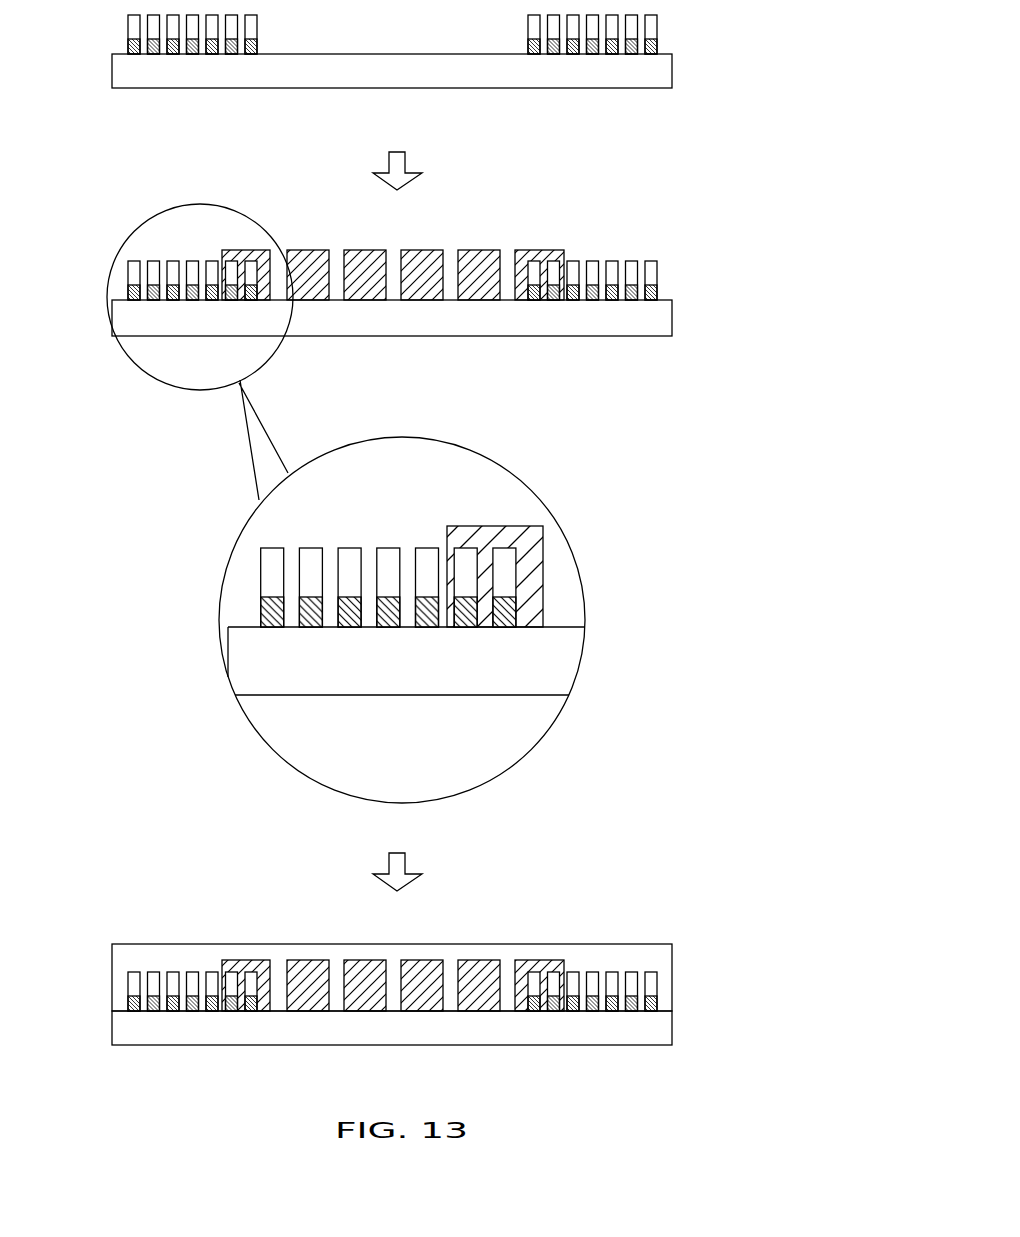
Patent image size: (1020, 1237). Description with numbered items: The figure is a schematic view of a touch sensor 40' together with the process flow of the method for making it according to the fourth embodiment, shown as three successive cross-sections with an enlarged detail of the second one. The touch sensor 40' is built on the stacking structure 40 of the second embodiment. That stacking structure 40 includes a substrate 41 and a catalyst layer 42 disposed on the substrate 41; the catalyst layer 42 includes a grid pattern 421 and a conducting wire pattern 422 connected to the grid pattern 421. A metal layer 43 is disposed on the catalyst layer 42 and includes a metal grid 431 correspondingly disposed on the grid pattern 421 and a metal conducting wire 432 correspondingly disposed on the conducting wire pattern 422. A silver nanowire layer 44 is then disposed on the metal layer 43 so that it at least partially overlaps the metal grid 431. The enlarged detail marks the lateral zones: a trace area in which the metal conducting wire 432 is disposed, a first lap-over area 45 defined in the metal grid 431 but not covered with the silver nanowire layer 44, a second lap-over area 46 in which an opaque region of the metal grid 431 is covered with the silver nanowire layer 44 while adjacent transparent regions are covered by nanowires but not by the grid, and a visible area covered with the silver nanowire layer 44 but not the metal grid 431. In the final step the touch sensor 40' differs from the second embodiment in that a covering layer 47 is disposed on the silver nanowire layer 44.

The stacking structure 40 is at (726, 445).
The touch sensor 40' is at (100, 893).
The substrate 41 is at (657, 72).
The catalyst layer 42 is at (655, 43).
The metal layer 43 is at (650, 26).
The silver nanowire layer 44 is at (538, 262).
The first lap-over area 45 is at (448, 718).
The second lap-over area 46 is at (513, 718).
The covering layer 47 is at (643, 957).
The grid pattern 421 is at (503, 628).
The conducting wire pattern 422 is at (300, 627).
The metal grid 431 is at (503, 557).
The metal conducting wire 432 is at (315, 570).